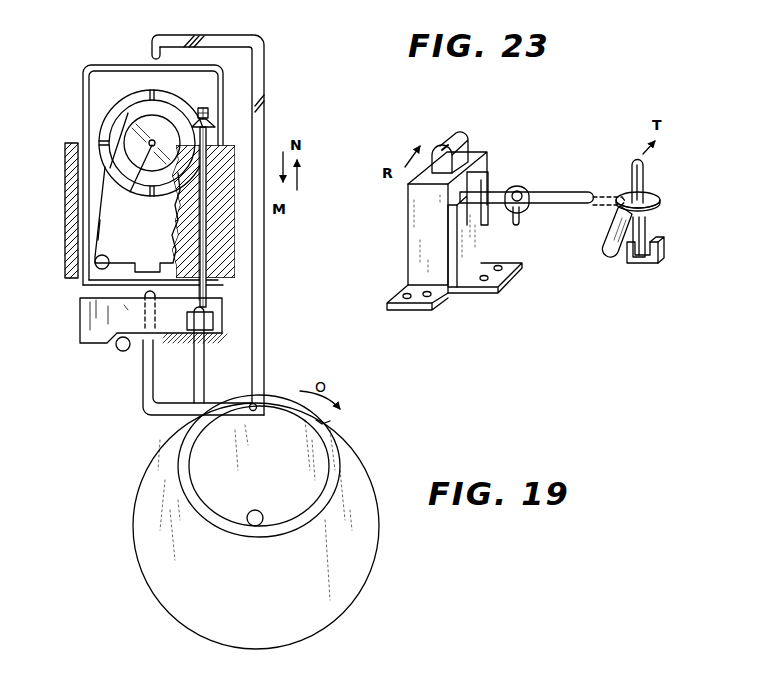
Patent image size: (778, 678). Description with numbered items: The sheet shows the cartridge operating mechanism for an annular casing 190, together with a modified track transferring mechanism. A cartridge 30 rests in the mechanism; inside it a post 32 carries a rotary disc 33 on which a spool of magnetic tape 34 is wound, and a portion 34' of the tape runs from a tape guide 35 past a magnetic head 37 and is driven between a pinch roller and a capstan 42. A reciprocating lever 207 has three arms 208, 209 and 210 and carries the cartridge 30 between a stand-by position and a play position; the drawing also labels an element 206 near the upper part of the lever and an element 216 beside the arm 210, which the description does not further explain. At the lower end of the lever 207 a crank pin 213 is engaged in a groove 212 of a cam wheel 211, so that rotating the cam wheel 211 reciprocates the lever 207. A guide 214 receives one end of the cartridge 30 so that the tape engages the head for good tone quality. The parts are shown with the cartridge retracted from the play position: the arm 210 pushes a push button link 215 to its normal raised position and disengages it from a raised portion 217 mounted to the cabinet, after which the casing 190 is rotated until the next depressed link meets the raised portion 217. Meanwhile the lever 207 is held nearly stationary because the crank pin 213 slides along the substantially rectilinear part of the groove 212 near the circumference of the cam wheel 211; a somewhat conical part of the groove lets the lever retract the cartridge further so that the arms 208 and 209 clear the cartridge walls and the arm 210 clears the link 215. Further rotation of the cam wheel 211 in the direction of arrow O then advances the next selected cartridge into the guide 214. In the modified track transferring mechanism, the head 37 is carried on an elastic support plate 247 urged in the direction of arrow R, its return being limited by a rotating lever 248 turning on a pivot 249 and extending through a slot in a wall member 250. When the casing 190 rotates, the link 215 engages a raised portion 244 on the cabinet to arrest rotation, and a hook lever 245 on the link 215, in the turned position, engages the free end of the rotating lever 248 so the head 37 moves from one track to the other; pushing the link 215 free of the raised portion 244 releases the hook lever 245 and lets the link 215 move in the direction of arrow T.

In FIG. 19, the cartridge 30 is at (83, 97).
In FIG. 19, the post 32 is at (144, 170).
In FIG. 19, the rotary disc 33 is at (165, 122).
In FIG. 19, the magnetic tape 34 is at (112, 124).
In FIG. 19, the tape portion 34' is at (120, 229).
In FIG. 19, the tape guide 35 is at (108, 258).
In FIG. 23, the magnetic head 37 is at (470, 138).
In FIG. 19, the capstan 42 is at (119, 351).
In FIG. 19, the annular casing 190 is at (65, 207).
In FIG. 19, the screw 206 is at (208, 113).
In FIG. 19, the reciprocating lever 207 is at (264, 288).
In FIG. 19, the arm 208 is at (204, 27).
In FIG. 19, the arm 209 is at (143, 390).
In FIG. 19, the arm 210 is at (207, 360).
In FIG. 19, the cam wheel 211 is at (362, 474).
In FIG. 19, the groove 212 is at (281, 535).
In FIG. 19, the crank pin 213 is at (256, 403).
In FIG. 19, the guide 214 is at (80, 320).
In FIG. 19, the push button link 215 is at (210, 247).
In FIG. 23, the push button link 215 is at (648, 178).
In FIG. 19, the slot 216 is at (182, 355).
In FIG. 19, the raised portion 217 is at (213, 320).
In FIG. 23, the raised portion 244 is at (660, 254).
In FIG. 23, the hook lever 245 is at (613, 252).
In FIG. 23, the support plate 247 is at (418, 223).
In FIG. 23, the rotating lever 248 is at (566, 191).
In FIG. 23, the pivot 249 is at (520, 188).
In FIG. 23, the wall member 250 is at (490, 245).